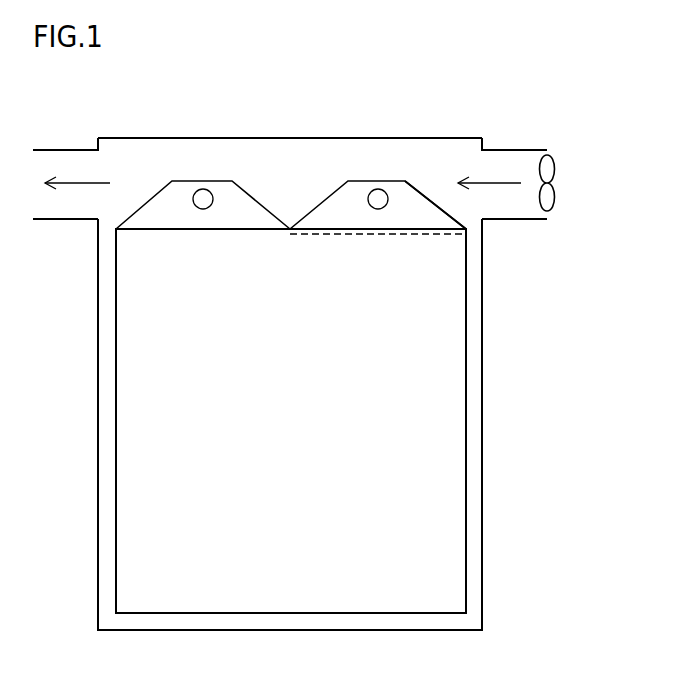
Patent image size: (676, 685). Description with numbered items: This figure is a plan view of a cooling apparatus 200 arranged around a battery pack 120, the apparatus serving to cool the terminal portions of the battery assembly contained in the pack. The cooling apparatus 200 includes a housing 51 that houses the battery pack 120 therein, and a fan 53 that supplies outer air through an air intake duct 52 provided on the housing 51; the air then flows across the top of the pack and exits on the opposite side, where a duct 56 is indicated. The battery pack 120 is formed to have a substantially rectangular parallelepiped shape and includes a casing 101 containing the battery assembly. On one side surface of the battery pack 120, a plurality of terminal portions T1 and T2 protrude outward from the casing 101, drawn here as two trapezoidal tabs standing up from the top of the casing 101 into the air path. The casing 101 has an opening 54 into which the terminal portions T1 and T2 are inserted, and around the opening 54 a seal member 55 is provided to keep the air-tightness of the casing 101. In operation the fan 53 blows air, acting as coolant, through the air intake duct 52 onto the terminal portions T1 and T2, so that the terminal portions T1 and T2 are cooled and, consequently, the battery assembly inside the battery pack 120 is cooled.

The cooling apparatus 200 is at (285, 110).
The exhaust duct 56 is at (53, 148).
The housing 51 is at (430, 138).
The air intake duct 52 is at (517, 150).
The fan 53 is at (553, 169).
The opening 54 is at (438, 224).
The seal member 55 is at (420, 235).
The casing 101 is at (468, 358).
The battery pack 120 is at (448, 413).
The terminal portion T1 is at (353, 205).
The terminal portion T2 is at (178, 205).